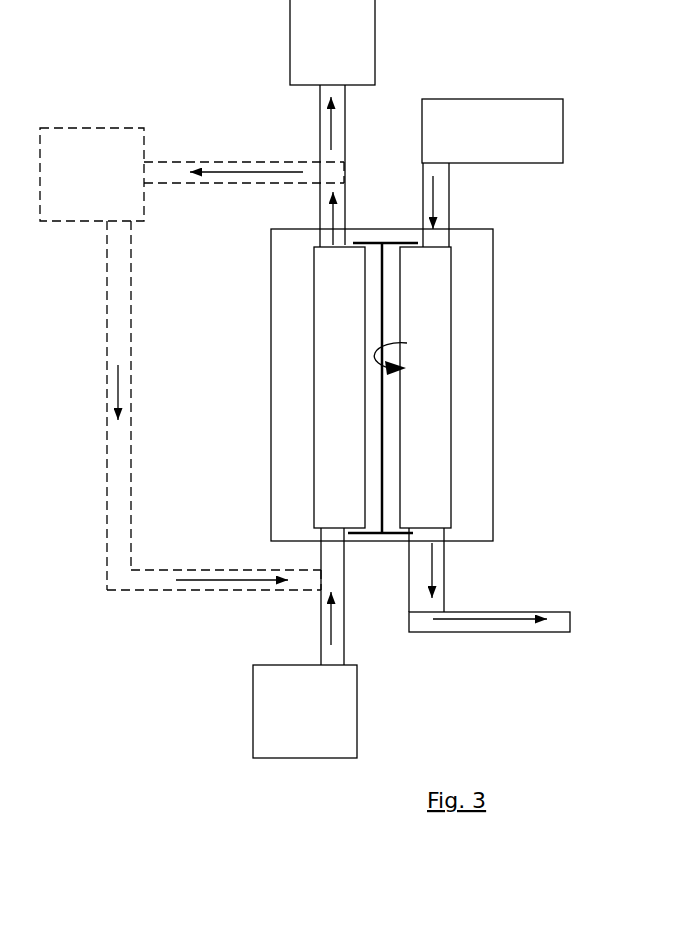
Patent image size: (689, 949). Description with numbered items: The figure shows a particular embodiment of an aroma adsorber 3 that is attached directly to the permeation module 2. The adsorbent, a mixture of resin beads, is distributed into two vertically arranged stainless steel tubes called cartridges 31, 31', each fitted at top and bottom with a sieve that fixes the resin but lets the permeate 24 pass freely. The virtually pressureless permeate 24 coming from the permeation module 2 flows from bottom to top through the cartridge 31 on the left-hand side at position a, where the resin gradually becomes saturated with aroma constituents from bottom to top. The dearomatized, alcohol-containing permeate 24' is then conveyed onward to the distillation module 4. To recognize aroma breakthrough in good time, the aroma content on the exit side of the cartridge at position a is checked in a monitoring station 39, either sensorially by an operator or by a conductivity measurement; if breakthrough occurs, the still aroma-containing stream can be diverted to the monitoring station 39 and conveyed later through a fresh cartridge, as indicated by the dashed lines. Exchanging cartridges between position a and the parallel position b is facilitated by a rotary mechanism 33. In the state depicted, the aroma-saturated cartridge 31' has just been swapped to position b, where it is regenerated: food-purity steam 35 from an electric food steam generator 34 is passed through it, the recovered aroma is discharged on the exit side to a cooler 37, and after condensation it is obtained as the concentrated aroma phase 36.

The permeation module 2 is at (305, 711).
The aroma adsorber 3 is at (268, 336).
The distillation module 4 is at (332, 42).
The permeate 24 is at (214, 371).
The dearomatized, alcohol-containing permeate 24' is at (261, 110).
The cartridge 31 is at (339, 387).
The cartridge 31' is at (425, 387).
The rotary mechanism 33 is at (408, 300).
The electric food steam generator 34 is at (492, 131).
The steam 35 is at (440, 208).
The aroma phase 36 is at (490, 620).
The cooler 37 is at (446, 573).
The monitoring station 39 is at (327, 175).
The position a) a is at (312, 443).
The position b) b is at (457, 438).